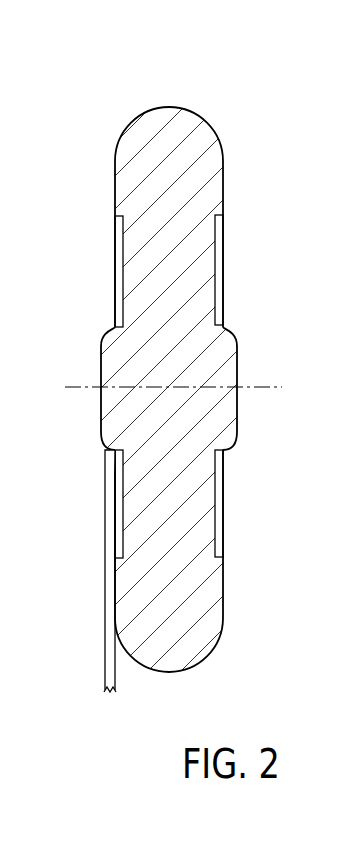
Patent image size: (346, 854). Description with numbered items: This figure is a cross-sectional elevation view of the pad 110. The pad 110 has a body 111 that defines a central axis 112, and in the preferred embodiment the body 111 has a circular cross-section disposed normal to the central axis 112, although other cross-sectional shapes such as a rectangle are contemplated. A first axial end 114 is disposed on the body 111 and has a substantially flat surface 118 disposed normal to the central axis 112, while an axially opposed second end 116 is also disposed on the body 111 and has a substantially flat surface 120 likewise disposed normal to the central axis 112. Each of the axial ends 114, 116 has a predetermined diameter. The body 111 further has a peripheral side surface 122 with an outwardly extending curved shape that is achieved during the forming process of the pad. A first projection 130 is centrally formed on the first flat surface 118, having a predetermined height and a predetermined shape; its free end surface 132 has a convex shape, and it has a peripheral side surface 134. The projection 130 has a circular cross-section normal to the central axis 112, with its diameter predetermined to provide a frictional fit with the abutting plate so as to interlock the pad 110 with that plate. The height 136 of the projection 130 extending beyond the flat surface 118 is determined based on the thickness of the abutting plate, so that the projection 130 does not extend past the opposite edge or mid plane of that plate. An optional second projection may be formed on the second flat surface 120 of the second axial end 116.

The pad 110 is at (258, 108).
The body 111 is at (117, 140).
The central axis 112 is at (75, 386).
The first axial end 114 is at (114, 183).
The second end 116 is at (224, 183).
The flat surface 118 is at (113, 591).
The flat surface 120 is at (224, 582).
The peripheral side surface 122 is at (172, 107).
The first projection 130 is at (236, 333).
The free end surface 132 is at (100, 431).
The peripheral side surface of the projection 134 is at (100, 326).
The height 136 is at (110, 693).